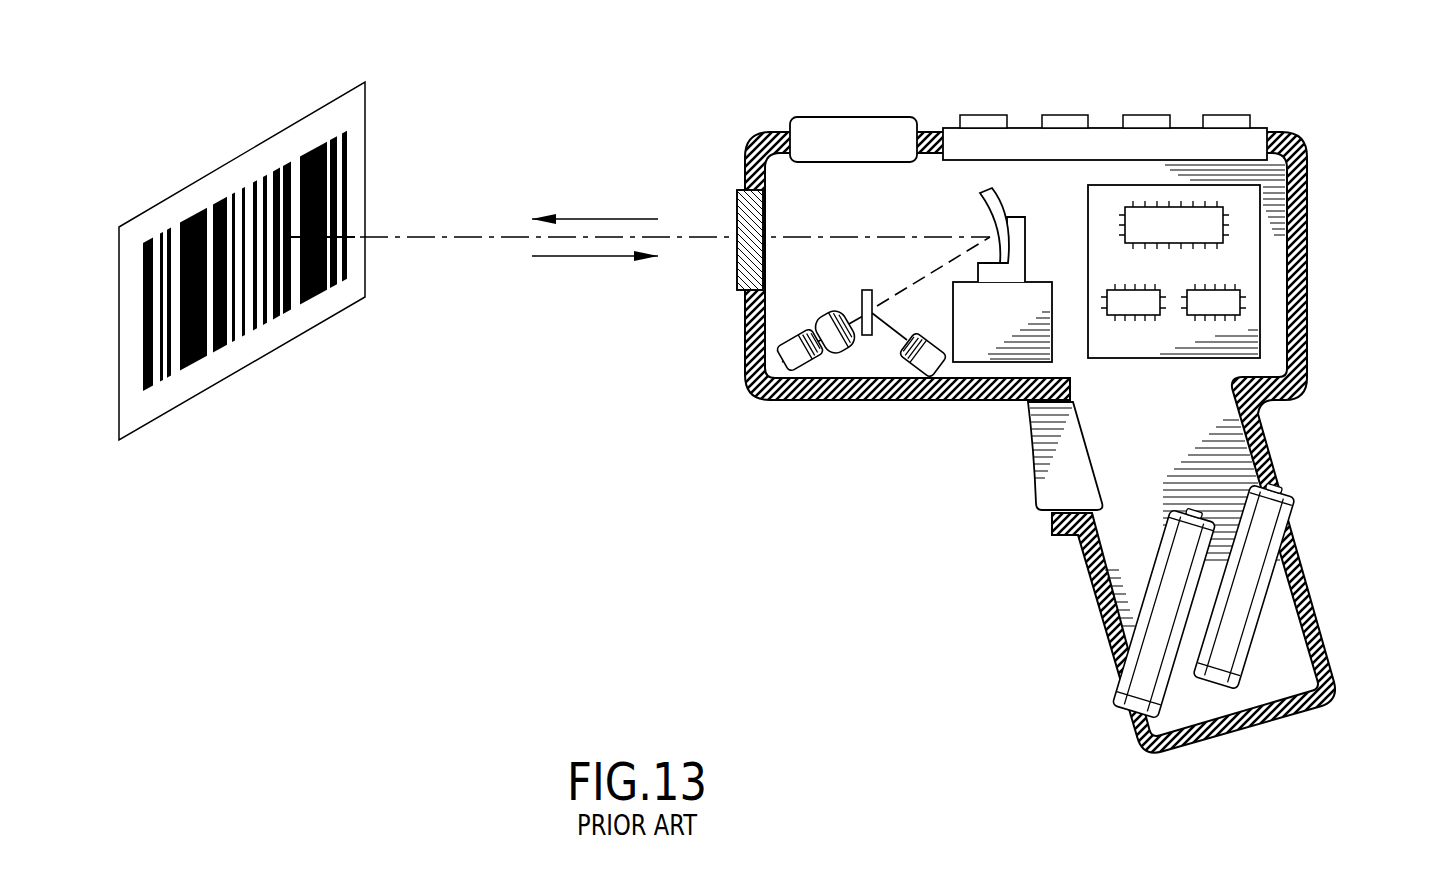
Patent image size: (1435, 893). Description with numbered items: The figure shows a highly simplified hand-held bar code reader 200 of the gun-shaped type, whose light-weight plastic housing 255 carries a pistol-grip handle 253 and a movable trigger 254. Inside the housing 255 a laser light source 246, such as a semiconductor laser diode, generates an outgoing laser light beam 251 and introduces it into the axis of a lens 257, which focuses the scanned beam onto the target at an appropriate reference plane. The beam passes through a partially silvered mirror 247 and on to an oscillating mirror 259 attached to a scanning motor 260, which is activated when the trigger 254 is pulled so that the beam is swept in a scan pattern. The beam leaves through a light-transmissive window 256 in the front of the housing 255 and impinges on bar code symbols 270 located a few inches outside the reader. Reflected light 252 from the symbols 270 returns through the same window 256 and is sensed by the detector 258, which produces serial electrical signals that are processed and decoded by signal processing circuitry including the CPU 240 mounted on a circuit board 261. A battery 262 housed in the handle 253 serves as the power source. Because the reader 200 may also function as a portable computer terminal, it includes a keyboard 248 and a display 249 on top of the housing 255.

The bar code scanner (prior art) 200 is at (842, 578).
The CPU 240 is at (1143, 225).
The laser light source 246 is at (790, 340).
The partially silvered mirror 247 is at (870, 292).
The keyboard 248 is at (1195, 137).
The display 249 is at (857, 120).
The outgoing laser light beam 251 is at (590, 220).
The reflected light 252 is at (550, 258).
The handle 253 is at (1110, 635).
The trigger 254 is at (1065, 478).
The housing 255 is at (1307, 337).
The light-transmissive window 256 is at (737, 200).
The lens 257 is at (845, 358).
The detector 258 is at (923, 378).
The oscillating mirror 259 is at (1005, 203).
The scanning motor 260 is at (973, 350).
The printed circuit board 261 is at (1302, 233).
The battery 262 is at (1265, 672).
The symbols 270 is at (358, 123).